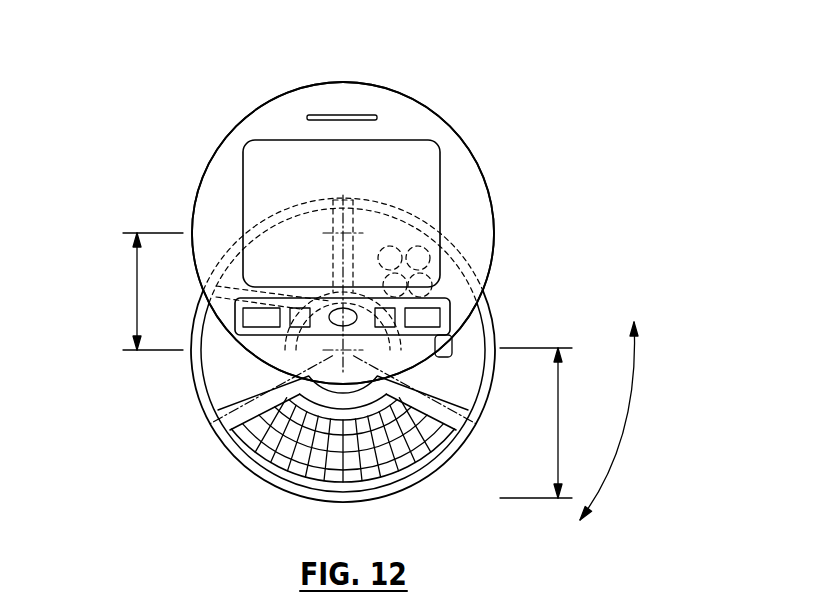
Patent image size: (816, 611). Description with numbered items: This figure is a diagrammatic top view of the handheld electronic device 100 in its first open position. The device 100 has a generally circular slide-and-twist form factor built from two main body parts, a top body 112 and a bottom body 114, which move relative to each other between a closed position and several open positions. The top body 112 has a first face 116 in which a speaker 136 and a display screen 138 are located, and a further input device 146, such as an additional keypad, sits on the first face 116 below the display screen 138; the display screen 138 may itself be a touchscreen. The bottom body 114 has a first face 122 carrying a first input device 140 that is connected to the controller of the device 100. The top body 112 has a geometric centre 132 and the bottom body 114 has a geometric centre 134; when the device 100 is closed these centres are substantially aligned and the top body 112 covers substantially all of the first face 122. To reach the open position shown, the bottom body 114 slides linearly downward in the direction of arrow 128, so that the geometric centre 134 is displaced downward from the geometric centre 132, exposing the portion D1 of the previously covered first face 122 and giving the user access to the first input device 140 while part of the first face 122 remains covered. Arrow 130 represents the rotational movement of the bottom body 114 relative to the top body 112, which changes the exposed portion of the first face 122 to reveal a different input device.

The handheld electronic device 100 is at (390, 277).
The top body 112 is at (470, 148).
The bottom body 114 is at (522, 388).
The first face 116 is at (225, 167).
The first face 122 is at (473, 418).
The arrow 128 is at (137, 272).
The arrow 130 is at (623, 435).
The geometric centre 132 is at (355, 230).
The geometric centre 134 is at (272, 475).
The speaker 136 is at (355, 115).
The display screen 138 is at (362, 174).
The first input device 140 is at (453, 457).
The further input device 146 is at (452, 316).
The exposed portion of the first face D1 is at (536, 423).